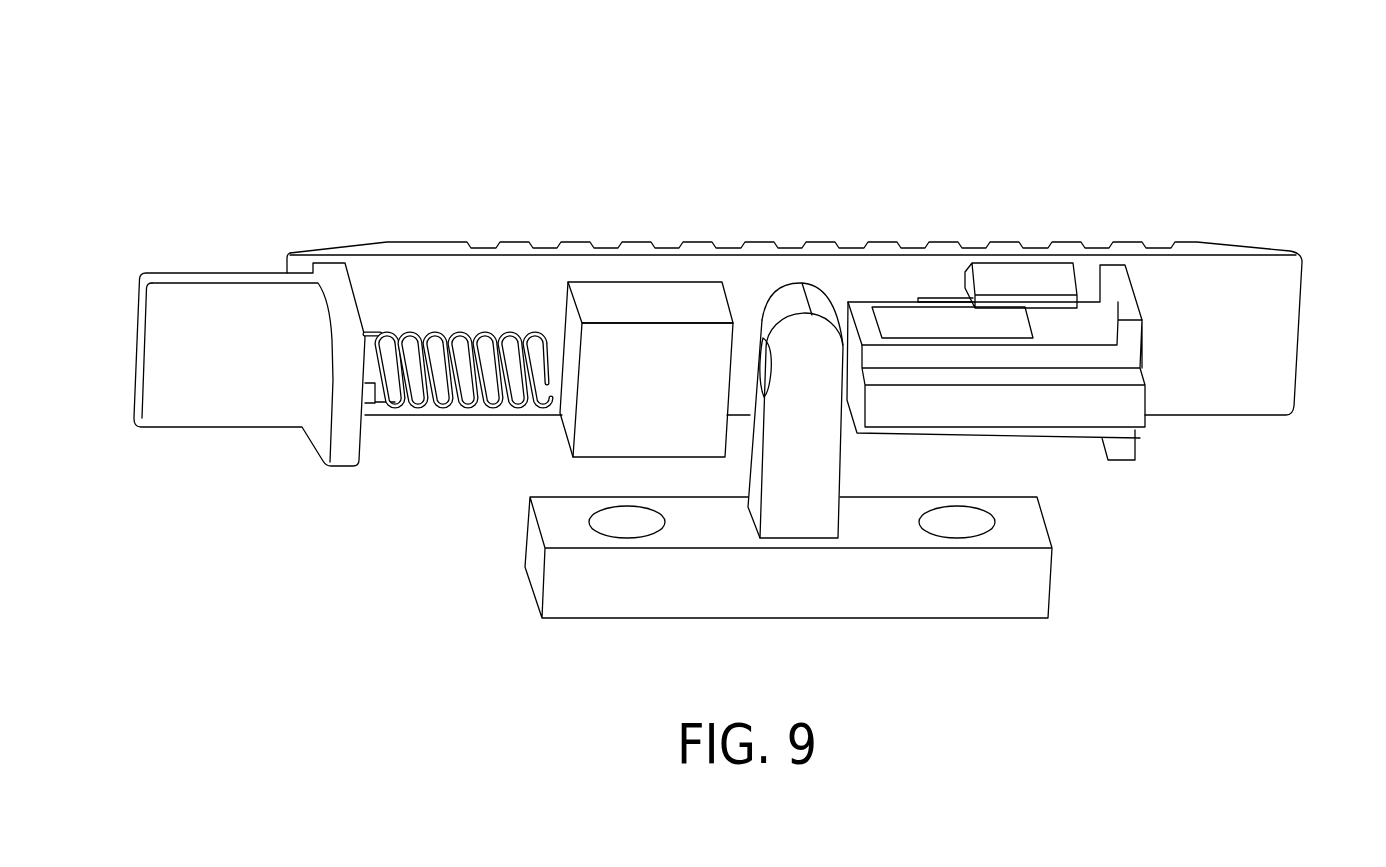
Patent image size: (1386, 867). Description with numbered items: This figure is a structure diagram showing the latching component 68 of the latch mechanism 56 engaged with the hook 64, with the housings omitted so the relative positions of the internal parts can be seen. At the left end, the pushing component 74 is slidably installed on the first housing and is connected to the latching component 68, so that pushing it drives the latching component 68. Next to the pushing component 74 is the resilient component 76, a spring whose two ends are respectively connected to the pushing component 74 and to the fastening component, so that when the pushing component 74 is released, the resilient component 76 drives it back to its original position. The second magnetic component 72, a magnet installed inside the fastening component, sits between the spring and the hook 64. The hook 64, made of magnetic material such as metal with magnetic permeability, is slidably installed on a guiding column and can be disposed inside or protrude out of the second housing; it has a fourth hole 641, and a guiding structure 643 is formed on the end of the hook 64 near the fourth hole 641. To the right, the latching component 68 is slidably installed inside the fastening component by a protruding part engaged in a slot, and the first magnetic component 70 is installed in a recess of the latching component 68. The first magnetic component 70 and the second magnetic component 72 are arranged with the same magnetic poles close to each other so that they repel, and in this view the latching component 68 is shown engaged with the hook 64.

The latch mechanism 56 is at (1258, 107).
The pushing component 74 is at (388, 283).
The resilient component 76 is at (457, 330).
The second magnetic component 72 is at (637, 295).
The hook 64 is at (784, 316).
The fourth hole 641 is at (761, 358).
The guiding structure 643 is at (790, 300).
The latching component 68 is at (857, 335).
The first magnetic component 70 is at (940, 318).